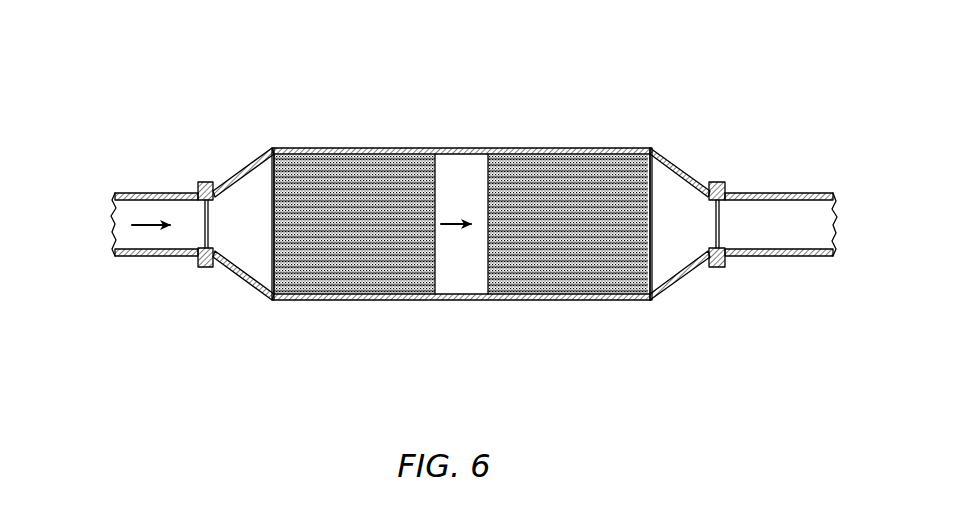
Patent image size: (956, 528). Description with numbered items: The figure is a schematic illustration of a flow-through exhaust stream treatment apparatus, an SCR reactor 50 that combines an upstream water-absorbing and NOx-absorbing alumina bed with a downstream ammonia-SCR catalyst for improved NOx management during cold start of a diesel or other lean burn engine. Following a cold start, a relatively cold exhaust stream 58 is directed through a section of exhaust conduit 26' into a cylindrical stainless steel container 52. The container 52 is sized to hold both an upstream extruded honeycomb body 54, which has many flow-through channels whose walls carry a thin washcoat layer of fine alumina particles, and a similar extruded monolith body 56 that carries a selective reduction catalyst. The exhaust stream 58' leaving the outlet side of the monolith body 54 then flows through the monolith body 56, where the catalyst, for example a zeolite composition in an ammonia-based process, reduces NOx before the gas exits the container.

The SCR reactor 50 is at (408, 305).
The cylindrical stainless steel container 52 is at (238, 284).
The extruded honeycomb body 54 is at (353, 187).
The extruded monolith body 56 is at (553, 188).
The exhaust stream 58 is at (123, 184).
The exhaust stream 58' is at (476, 150).
The exhaust conduit 26' is at (447, 256).